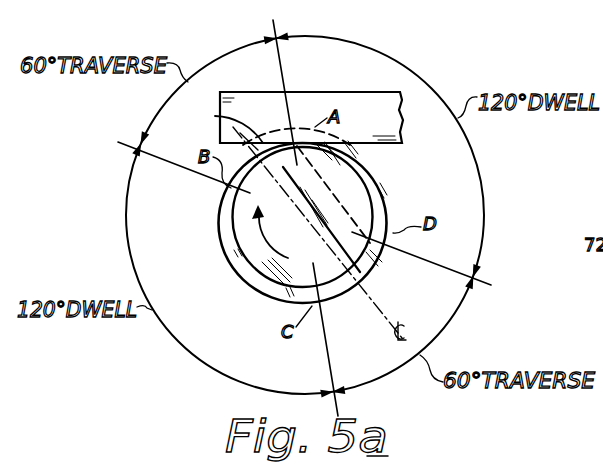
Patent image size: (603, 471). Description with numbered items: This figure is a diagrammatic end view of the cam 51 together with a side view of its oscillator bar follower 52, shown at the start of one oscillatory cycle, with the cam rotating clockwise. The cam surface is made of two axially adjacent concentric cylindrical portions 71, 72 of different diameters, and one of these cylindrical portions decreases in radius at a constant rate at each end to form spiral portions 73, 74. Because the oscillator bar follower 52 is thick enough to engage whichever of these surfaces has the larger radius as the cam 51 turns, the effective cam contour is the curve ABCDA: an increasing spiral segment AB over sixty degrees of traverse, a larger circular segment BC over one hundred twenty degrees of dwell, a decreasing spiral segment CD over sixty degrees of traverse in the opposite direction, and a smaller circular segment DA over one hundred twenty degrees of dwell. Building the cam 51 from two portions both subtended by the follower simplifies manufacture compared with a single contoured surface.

The cam 51 is at (385, 180).
The oscillator bar follower 52 is at (327, 93).
The cylindrical portion 71 is at (220, 232).
The cylindrical portion 72 is at (257, 285).
The spiral portion 73 is at (226, 117).
The spiral portion 74 is at (380, 260).